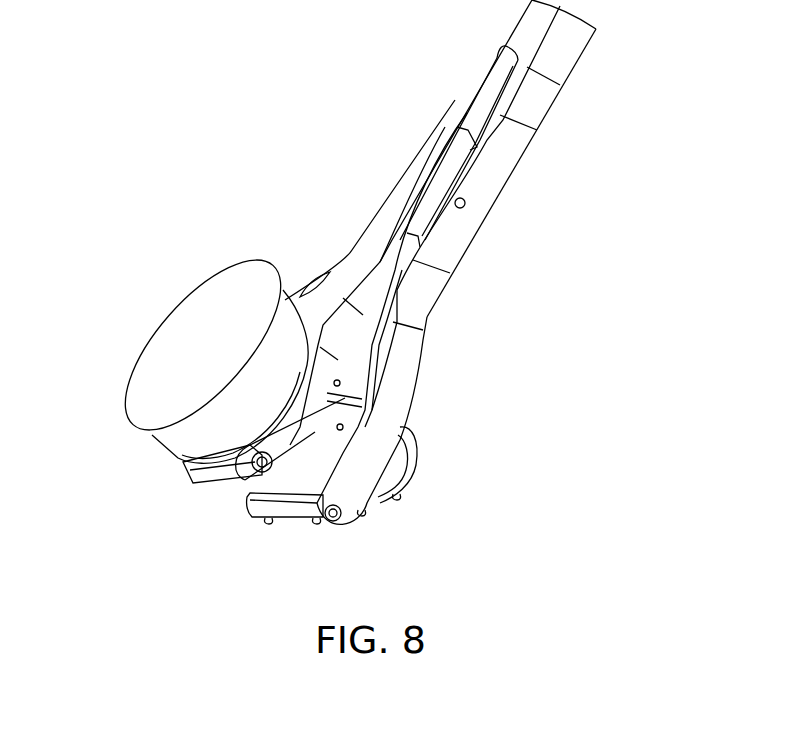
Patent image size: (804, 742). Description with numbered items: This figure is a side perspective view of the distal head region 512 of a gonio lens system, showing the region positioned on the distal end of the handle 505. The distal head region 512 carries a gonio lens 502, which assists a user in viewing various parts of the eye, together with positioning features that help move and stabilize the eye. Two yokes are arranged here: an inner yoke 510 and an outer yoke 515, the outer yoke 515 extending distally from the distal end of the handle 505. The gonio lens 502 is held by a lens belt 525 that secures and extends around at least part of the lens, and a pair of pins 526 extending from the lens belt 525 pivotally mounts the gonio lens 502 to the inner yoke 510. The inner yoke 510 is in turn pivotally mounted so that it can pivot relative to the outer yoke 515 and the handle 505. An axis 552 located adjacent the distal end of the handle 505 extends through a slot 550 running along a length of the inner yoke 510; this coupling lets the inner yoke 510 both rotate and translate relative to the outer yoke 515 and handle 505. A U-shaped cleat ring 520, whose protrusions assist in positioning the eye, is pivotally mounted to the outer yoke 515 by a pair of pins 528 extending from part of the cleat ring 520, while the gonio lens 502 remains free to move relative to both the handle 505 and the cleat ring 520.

The gonio lens 502 is at (203, 313).
The handle 505 is at (567, 47).
The inner yoke 510 is at (342, 273).
The distal head region 512 is at (128, 292).
The outer yoke 515 is at (392, 395).
The cleat ring 520 is at (392, 482).
The lens belt 525 is at (220, 467).
The pins 526 is at (263, 473).
The pins 528 is at (338, 518).
The slot 550 is at (417, 225).
The axis 552 is at (466, 205).